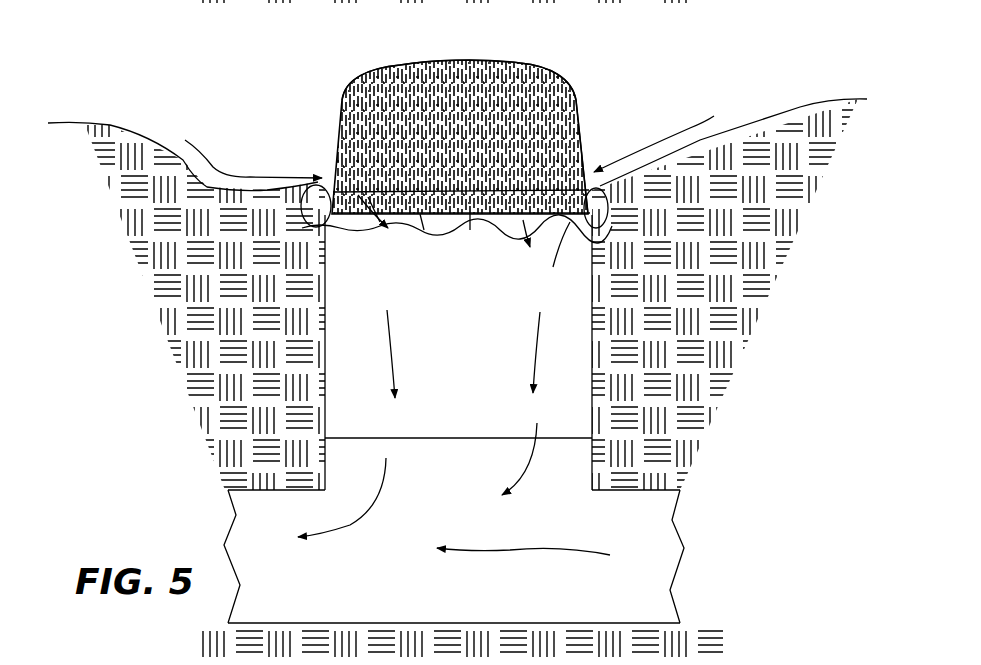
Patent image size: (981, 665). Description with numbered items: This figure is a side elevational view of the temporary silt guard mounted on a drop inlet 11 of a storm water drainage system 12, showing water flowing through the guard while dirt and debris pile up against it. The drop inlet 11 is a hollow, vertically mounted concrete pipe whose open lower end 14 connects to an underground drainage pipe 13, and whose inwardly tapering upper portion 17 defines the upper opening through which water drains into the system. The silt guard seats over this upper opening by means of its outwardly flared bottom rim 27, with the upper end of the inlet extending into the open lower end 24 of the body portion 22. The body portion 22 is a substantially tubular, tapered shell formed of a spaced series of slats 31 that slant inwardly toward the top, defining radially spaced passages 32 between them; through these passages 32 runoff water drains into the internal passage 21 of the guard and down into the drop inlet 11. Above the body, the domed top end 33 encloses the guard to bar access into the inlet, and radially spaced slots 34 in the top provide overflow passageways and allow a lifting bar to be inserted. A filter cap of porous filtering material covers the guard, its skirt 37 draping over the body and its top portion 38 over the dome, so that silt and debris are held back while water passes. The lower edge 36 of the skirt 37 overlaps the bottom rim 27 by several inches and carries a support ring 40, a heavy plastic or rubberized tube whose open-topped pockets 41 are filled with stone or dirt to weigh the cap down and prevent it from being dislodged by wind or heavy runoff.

The drop inlet 11 is at (576, 263).
The storm water drainage system 12 is at (598, 329).
The underground drainage pipe 13 is at (655, 592).
The open lower end 14 is at (553, 440).
The inwardly tapering upper portion 17 is at (448, 233).
The internal passage 21 is at (348, 130).
The body portion 22 is at (578, 118).
The open lower end 24 is at (358, 222).
The bottom rim 27 is at (424, 232).
The slats 31 is at (375, 225).
The passages 32 is at (470, 232).
The domed top end 33 is at (462, 60).
The slots 34 is at (402, 63).
The lower edge 36 is at (508, 220).
The skirt 37 is at (583, 134).
The top portion 38 is at (498, 62).
The support ring 40 is at (303, 214).
The pockets 41 is at (553, 261).